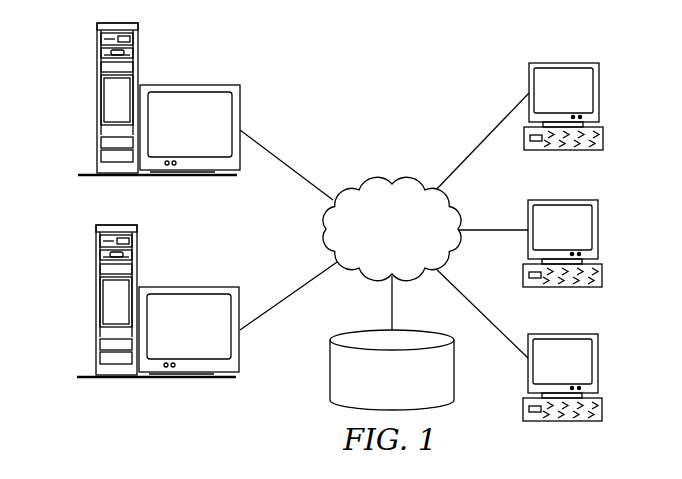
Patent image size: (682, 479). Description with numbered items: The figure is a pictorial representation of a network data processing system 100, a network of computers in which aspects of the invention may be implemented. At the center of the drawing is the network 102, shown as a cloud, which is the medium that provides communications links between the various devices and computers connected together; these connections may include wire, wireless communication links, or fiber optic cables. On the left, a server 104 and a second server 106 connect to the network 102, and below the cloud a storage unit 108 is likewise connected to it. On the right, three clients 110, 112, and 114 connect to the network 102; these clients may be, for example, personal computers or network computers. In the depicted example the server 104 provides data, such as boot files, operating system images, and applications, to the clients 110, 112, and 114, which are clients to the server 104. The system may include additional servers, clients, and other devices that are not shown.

The network data processing system 100 is at (444, 68).
The network 102 is at (365, 182).
The server 104 is at (97, 102).
The server 106 is at (97, 302).
The storage unit 108 is at (330, 378).
The client 110 is at (600, 92).
The client 112 is at (599, 228).
The client 114 is at (597, 363).